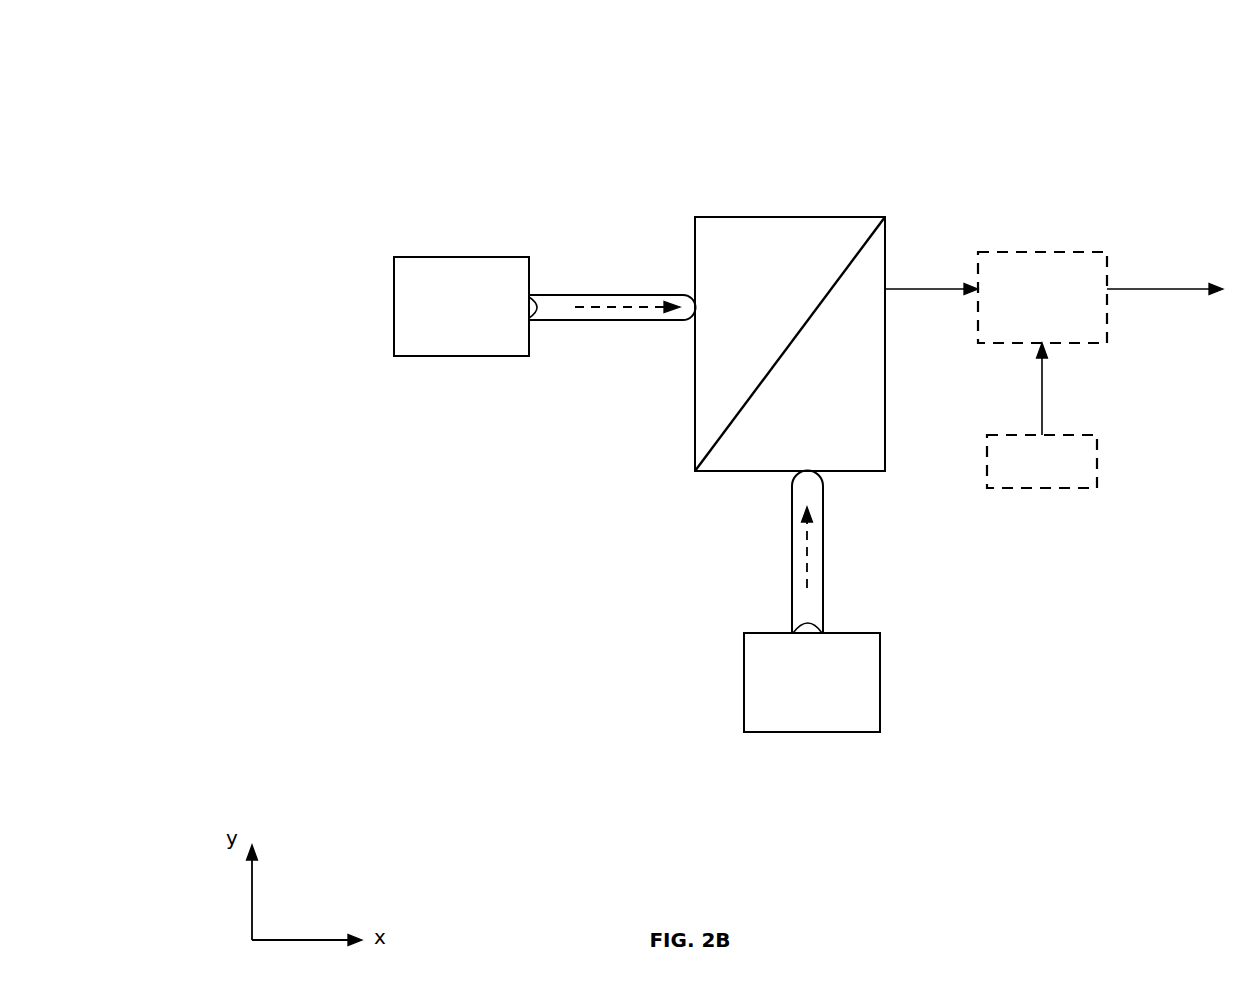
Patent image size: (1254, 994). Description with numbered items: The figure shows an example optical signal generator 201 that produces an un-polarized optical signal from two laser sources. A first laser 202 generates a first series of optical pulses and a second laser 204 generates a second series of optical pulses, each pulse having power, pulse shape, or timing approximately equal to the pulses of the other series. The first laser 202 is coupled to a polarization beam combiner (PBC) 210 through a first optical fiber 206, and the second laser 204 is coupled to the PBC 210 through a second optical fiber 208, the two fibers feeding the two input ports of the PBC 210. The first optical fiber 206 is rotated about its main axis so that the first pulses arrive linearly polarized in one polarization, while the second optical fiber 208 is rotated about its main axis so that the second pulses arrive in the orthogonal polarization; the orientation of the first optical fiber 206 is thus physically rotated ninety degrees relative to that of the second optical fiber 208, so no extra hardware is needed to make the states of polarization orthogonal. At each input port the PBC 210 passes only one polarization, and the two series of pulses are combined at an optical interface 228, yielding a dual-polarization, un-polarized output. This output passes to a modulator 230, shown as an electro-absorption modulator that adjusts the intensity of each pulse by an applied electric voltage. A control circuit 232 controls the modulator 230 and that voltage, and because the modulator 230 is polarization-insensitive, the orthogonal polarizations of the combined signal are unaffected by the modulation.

The optical signal generator 201 is at (186, 87).
The first laser 202 is at (462, 257).
The second laser 204 is at (772, 633).
The first optical fiber 206 is at (577, 297).
The second optical fiber 208 is at (790, 558).
The polarization beam combiner (PBC) 210 is at (787, 217).
The optical interface 228 is at (880, 227).
The modulator 230 is at (1038, 252).
The control circuit 232 is at (1073, 488).